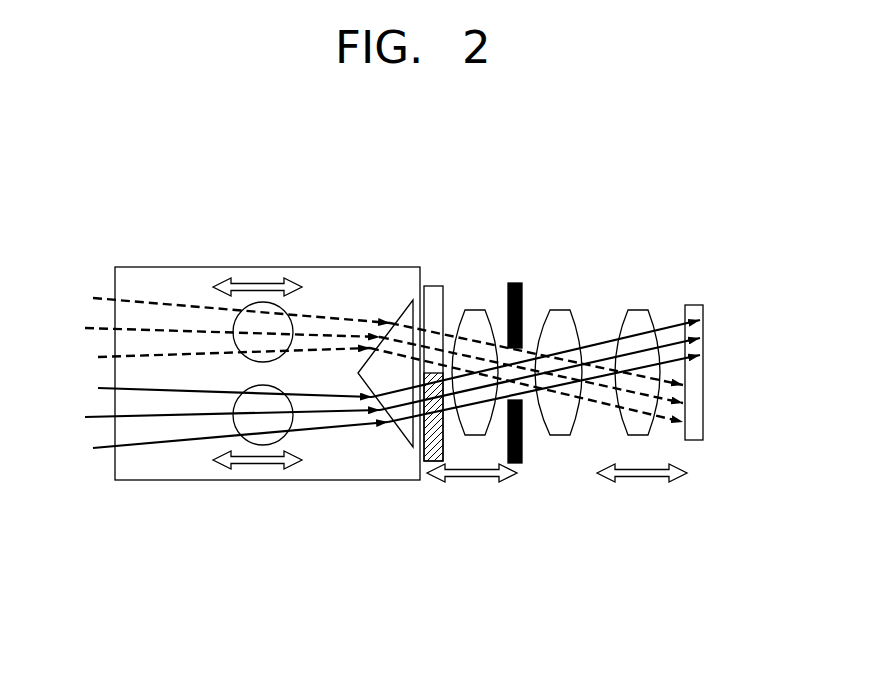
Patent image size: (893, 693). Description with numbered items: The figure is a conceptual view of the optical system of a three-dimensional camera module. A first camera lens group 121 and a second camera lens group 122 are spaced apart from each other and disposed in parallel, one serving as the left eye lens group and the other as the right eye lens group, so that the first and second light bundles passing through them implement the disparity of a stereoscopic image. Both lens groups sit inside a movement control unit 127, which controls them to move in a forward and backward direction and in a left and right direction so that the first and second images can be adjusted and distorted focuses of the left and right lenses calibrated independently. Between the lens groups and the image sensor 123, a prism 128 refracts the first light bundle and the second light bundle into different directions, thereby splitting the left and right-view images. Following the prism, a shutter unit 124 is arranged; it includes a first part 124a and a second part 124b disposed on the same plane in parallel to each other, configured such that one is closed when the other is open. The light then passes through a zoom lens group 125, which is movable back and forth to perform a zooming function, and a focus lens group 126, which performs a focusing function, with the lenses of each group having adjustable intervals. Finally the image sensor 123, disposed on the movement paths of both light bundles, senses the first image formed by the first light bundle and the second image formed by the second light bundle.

The first camera lens group 121 is at (293, 324).
The second camera lens group 122 is at (284, 436).
The image sensor 123 is at (697, 438).
The shutter unit 124 is at (418, 442).
The first part 124a is at (428, 352).
The second part 124b is at (427, 461).
The zoom lens group 125 is at (473, 432).
The focus lens group 126 is at (555, 432).
The movement control unit 127 is at (349, 280).
The prism 128 is at (399, 320).